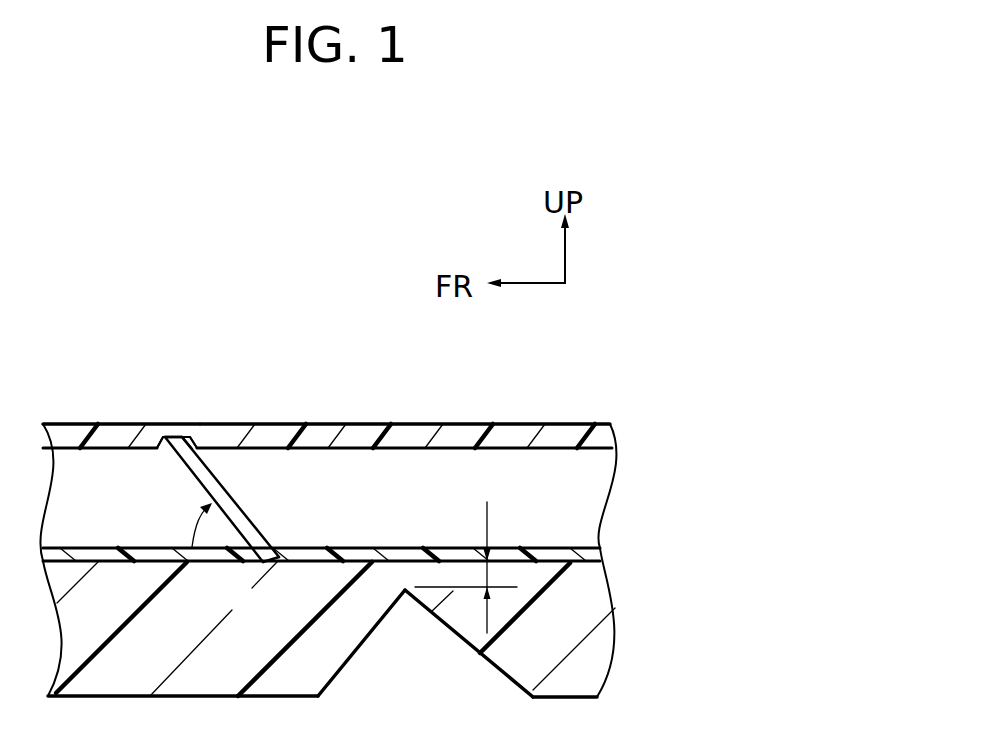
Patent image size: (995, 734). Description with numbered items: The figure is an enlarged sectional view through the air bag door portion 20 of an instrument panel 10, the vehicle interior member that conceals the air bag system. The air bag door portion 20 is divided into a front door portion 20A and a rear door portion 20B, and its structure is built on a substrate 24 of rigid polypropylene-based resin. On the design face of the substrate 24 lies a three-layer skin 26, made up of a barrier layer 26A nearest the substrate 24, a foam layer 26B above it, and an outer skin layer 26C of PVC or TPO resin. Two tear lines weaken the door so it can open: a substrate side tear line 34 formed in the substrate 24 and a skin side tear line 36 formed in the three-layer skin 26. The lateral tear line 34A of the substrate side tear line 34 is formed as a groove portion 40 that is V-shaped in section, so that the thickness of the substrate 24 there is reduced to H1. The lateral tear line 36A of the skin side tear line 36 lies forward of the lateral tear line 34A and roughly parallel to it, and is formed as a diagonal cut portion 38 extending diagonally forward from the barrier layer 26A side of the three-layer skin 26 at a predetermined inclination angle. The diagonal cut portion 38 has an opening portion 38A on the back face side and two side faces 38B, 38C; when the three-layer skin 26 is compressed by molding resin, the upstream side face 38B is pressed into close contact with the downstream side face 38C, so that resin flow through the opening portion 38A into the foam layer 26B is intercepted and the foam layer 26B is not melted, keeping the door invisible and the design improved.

The instrument panel 10 is at (409, 483).
The air bag door portion 20 is at (239, 439).
The front door portion 20A is at (81, 413).
The rear door portion 20B is at (432, 411).
The substrate 24 is at (373, 607).
The three-layer skin 26 is at (410, 491).
The barrier layer 26A is at (605, 555).
The foam layer 26B is at (602, 497).
The skin layer 26C is at (608, 441).
The substrate side tear line 34 is at (425, 607).
The lateral tear line 34A is at (358, 650).
The skin side tear line 36 is at (170, 438).
The lateral tear line 36A is at (182, 437).
The diagonal cut portion 38 is at (272, 506).
The opening portion 38A is at (267, 570).
The side face 38B is at (223, 486).
The side face 38C is at (198, 447).
The groove portion 40 is at (505, 674).
The thickness of the substrate H1 is at (470, 578).